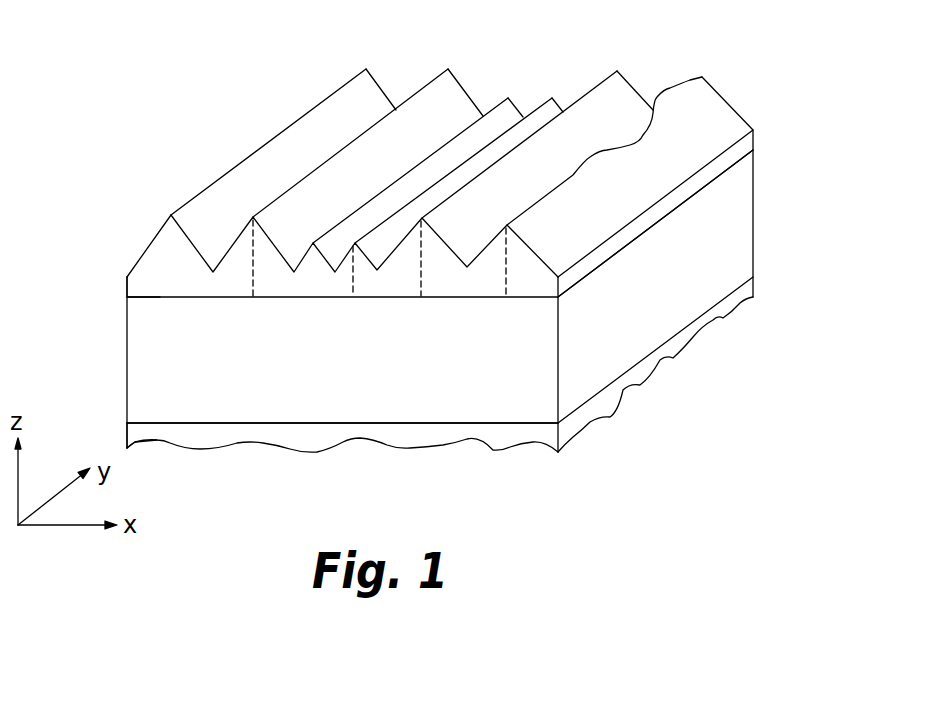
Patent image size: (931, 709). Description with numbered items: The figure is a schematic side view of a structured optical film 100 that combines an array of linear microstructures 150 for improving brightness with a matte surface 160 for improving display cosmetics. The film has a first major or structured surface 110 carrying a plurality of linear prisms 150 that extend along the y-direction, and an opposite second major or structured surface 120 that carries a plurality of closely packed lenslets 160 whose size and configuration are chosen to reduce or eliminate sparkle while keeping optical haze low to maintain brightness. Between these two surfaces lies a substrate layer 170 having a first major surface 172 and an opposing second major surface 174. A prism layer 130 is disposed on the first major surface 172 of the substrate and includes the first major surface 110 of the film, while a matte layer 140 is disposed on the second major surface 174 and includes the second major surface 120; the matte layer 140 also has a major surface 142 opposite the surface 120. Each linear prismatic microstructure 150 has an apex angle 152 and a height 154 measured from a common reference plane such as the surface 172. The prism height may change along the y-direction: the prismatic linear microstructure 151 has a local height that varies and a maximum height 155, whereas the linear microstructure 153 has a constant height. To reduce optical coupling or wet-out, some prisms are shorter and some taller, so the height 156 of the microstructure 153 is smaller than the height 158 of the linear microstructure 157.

The structured optical film 100 is at (235, 56).
The first major surface 110 is at (715, 115).
The second major surface 120 is at (723, 321).
The prism layer 130 is at (744, 147).
The matte layer 140 is at (749, 297).
The major surface of matte layer 142 is at (435, 423).
The linear prismatic microstructure 150 is at (235, 182).
The prismatic linear microstructure with varying height 151 is at (680, 80).
The apex angle 152 is at (165, 230).
The linear microstructure with constant height 153 is at (529, 112).
The height 154 is at (250, 287).
The maximum height 155 is at (504, 287).
The height of linear microstructure 153 156 is at (350, 287).
The taller linear microstructure 157 is at (593, 89).
The height of linear microstructure 157 158 is at (418, 287).
The lenslets (matte surface) 160 is at (507, 452).
The substrate layer 170 is at (743, 209).
The first major surface of substrate layer 172 is at (140, 297).
The second major surface of substrate layer 174 is at (173, 425).